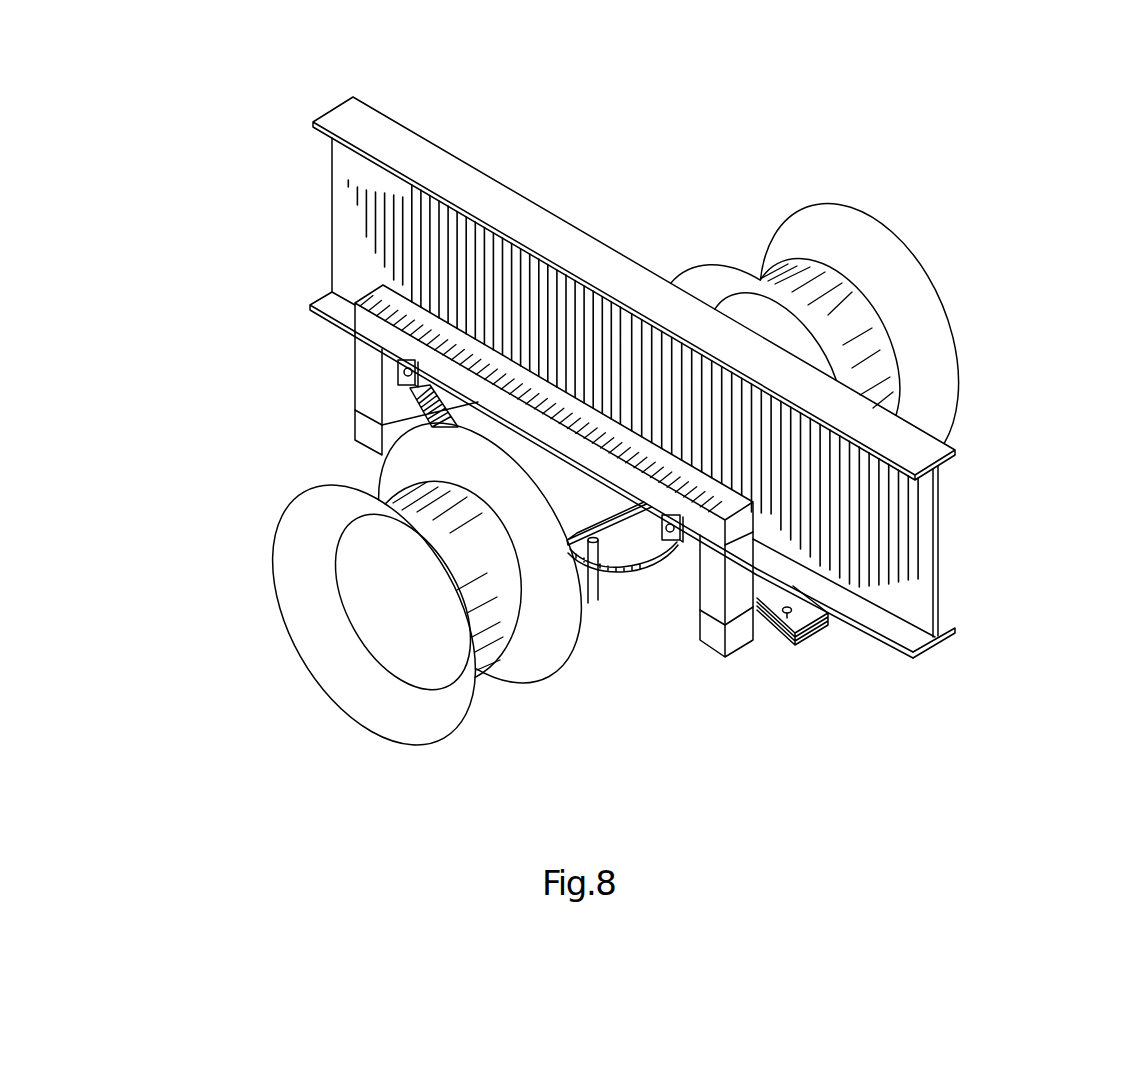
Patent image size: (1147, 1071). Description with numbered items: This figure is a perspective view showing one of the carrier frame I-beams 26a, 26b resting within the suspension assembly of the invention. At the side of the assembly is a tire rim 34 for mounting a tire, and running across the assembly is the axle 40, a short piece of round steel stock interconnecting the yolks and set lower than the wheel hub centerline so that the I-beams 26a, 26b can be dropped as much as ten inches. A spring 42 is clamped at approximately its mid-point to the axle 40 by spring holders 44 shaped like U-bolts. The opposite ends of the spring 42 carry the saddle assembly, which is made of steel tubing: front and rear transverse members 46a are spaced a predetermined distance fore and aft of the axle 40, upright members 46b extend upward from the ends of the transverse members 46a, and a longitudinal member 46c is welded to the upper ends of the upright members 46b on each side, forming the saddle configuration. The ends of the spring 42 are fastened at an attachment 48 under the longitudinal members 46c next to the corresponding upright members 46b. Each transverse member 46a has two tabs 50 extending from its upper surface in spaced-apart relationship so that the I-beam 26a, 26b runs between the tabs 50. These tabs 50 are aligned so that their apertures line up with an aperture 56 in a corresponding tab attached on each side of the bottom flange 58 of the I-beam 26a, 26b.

The carrier frame I-beam 26a is at (923, 613).
The carrier frame I-beam 26b is at (622, 475).
The tire rim 34 is at (875, 252).
The axle 40 is at (590, 512).
The spring 42 is at (598, 568).
The spring holder 44 is at (590, 605).
The transverse member 46a is at (362, 428).
The upright member 46b is at (362, 365).
The longitudinal member 46c is at (373, 297).
The attachment 48 is at (690, 540).
The tab 50 is at (813, 630).
The aperture 56 is at (788, 618).
The bottom flange 58 is at (888, 647).